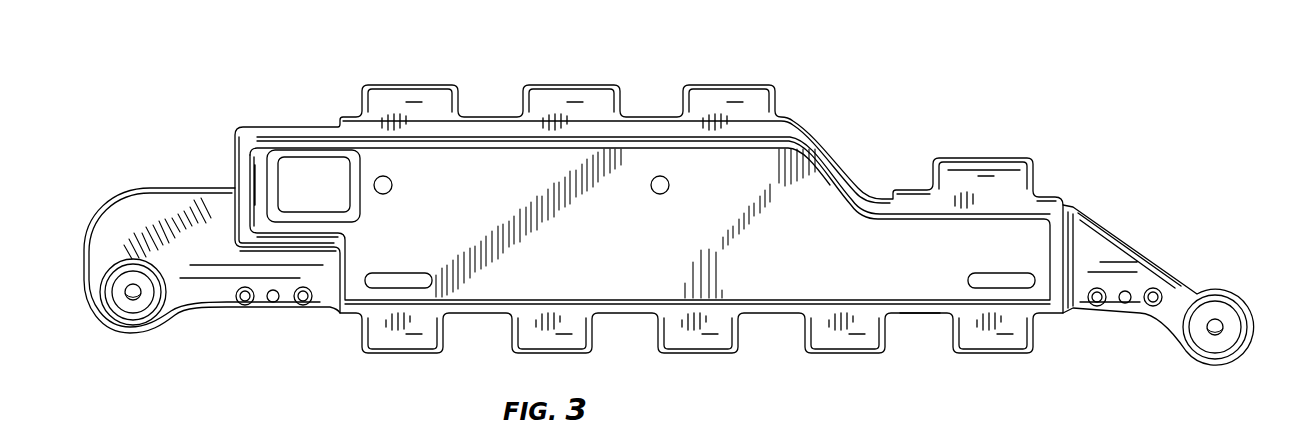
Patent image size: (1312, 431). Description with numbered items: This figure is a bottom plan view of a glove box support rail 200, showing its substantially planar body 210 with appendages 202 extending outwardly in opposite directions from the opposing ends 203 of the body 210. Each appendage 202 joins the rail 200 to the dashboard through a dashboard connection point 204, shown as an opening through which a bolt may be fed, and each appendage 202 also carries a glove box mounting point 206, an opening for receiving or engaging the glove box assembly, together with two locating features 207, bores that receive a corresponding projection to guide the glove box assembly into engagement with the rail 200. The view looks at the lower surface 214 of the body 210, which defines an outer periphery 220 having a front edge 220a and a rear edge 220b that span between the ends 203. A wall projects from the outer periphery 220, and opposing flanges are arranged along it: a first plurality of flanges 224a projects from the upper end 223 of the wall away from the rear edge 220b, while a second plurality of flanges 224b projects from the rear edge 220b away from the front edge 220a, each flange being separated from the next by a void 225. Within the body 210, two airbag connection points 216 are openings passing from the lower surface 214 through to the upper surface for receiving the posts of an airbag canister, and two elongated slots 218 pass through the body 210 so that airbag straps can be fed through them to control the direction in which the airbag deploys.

The rail 200 is at (878, 50).
The appendage 202 is at (127, 226).
The end 203 is at (233, 213).
The dashboard connection point 204 is at (135, 300).
The glove box mounting point 206 is at (270, 291).
The locating feature 207 is at (303, 305).
The body 210 is at (822, 232).
The lower surface 214 is at (770, 240).
The airbag connection point 216 is at (392, 185).
The slot 218 is at (398, 289).
The outer periphery 220 is at (967, 231).
The front edge 220a is at (737, 146).
The rear edge 220b is at (753, 300).
The upper end 223 is at (860, 197).
The first plurality of flanges 224a is at (560, 95).
The second plurality of flanges 224b is at (683, 340).
The void 225 is at (917, 344).